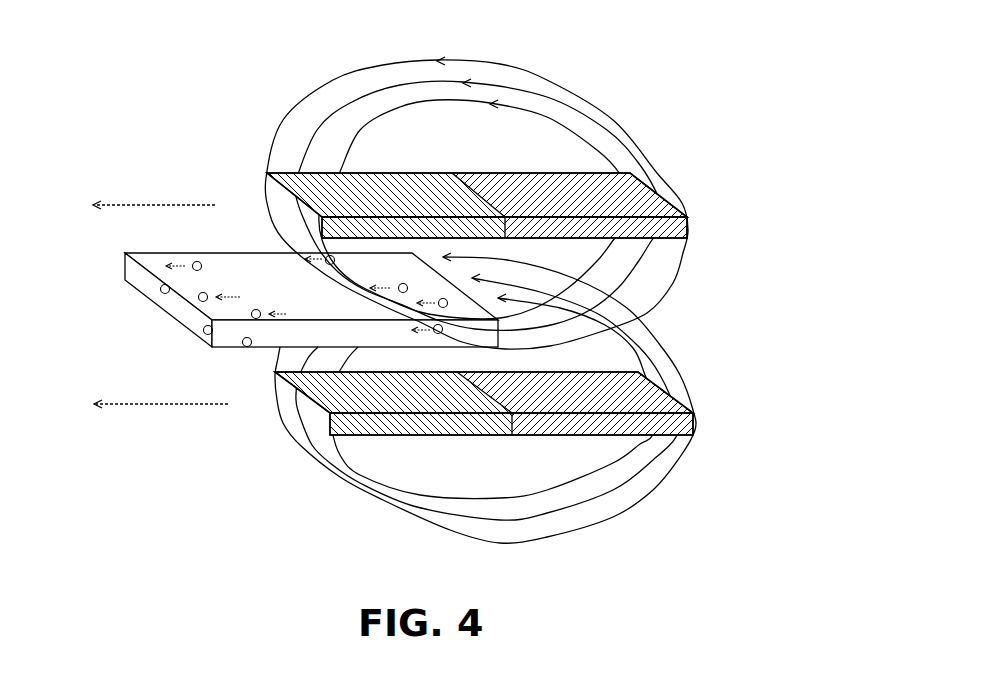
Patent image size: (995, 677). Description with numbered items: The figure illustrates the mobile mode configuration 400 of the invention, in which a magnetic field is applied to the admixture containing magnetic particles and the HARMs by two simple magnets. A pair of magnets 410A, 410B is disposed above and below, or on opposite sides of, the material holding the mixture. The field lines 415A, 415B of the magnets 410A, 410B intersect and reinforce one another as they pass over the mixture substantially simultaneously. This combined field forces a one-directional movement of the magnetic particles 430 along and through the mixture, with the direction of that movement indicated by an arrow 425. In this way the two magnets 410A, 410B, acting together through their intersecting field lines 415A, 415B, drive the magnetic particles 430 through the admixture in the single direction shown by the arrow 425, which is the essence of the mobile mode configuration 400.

The mobile mode configuration 400 is at (307, 498).
The magnet 410A is at (542, 173).
The magnet 410B is at (378, 437).
The field lines 415A is at (552, 82).
The field lines 415B is at (632, 506).
The arrow 425 is at (140, 403).
The magnetic particles 430 is at (200, 261).